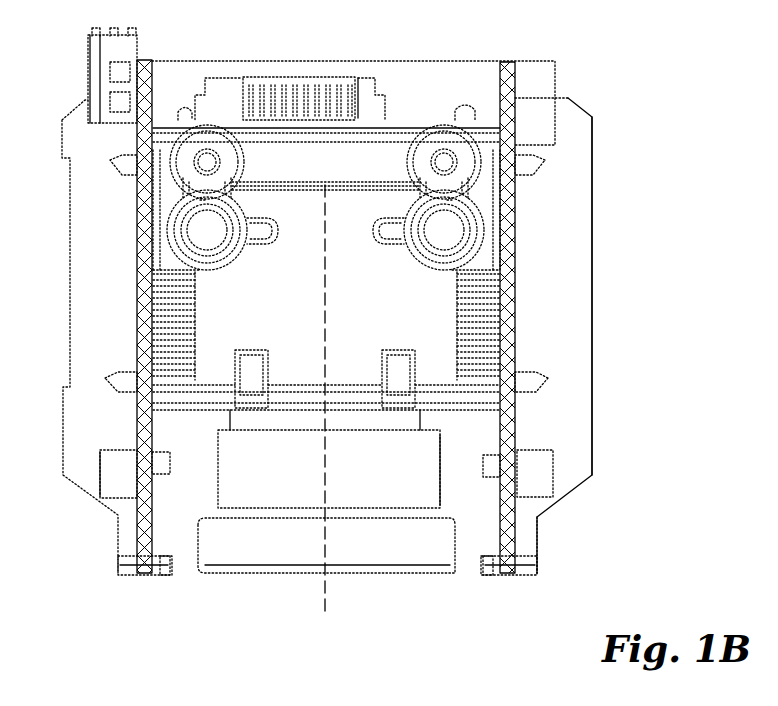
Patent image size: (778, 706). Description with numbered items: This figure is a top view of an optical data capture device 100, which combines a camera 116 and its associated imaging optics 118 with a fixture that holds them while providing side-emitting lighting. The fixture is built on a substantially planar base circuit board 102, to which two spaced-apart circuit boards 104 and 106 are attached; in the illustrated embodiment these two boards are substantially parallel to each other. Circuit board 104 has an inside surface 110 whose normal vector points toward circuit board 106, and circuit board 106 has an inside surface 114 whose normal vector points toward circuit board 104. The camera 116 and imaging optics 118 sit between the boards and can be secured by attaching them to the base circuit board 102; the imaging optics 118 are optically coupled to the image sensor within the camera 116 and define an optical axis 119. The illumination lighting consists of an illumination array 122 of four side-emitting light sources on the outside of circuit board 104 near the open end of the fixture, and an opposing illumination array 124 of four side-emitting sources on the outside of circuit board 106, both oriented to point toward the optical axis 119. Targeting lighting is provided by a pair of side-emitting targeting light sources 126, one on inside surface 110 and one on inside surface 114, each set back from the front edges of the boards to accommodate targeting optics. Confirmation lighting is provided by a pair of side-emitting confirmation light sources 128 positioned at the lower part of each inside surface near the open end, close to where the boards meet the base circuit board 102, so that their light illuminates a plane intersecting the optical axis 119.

The optical data capture device 100 is at (603, 56).
The base circuit board 102 is at (568, 313).
The circuit board 104 is at (508, 60).
The circuit board 106 is at (144, 58).
The inside surface 110 is at (500, 188).
The inside surface 114 is at (152, 186).
The camera 116 is at (301, 305).
The imaging optics 118 is at (386, 483).
The optical axis 119 is at (326, 590).
The illumination array 122 is at (540, 560).
The illumination array 124 is at (116, 560).
The side-emitting targeting light source 126 is at (165, 476).
The side-emitting confirmation light source 128 is at (170, 572).